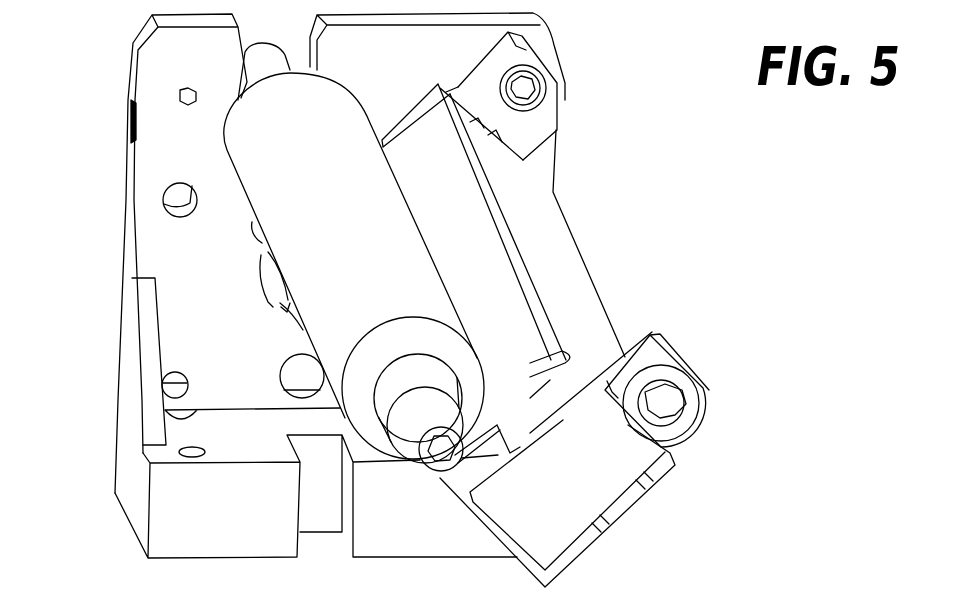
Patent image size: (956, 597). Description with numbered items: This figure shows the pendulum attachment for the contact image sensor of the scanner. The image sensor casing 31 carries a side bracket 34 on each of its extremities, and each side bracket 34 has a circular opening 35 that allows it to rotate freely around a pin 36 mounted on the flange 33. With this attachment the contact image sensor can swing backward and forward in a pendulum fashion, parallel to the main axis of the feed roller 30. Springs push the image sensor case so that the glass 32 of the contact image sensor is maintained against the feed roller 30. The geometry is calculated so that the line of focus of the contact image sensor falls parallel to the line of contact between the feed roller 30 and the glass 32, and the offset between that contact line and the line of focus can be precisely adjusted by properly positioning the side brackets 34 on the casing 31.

The feed roller 30 is at (240, 147).
The image sensor casing 31 is at (543, 240).
The glass 32 is at (527, 337).
The flanges 33 is at (157, 52).
The side brackets 34 is at (555, 498).
The circular opening 35 is at (705, 392).
The pin 36 is at (527, 92).